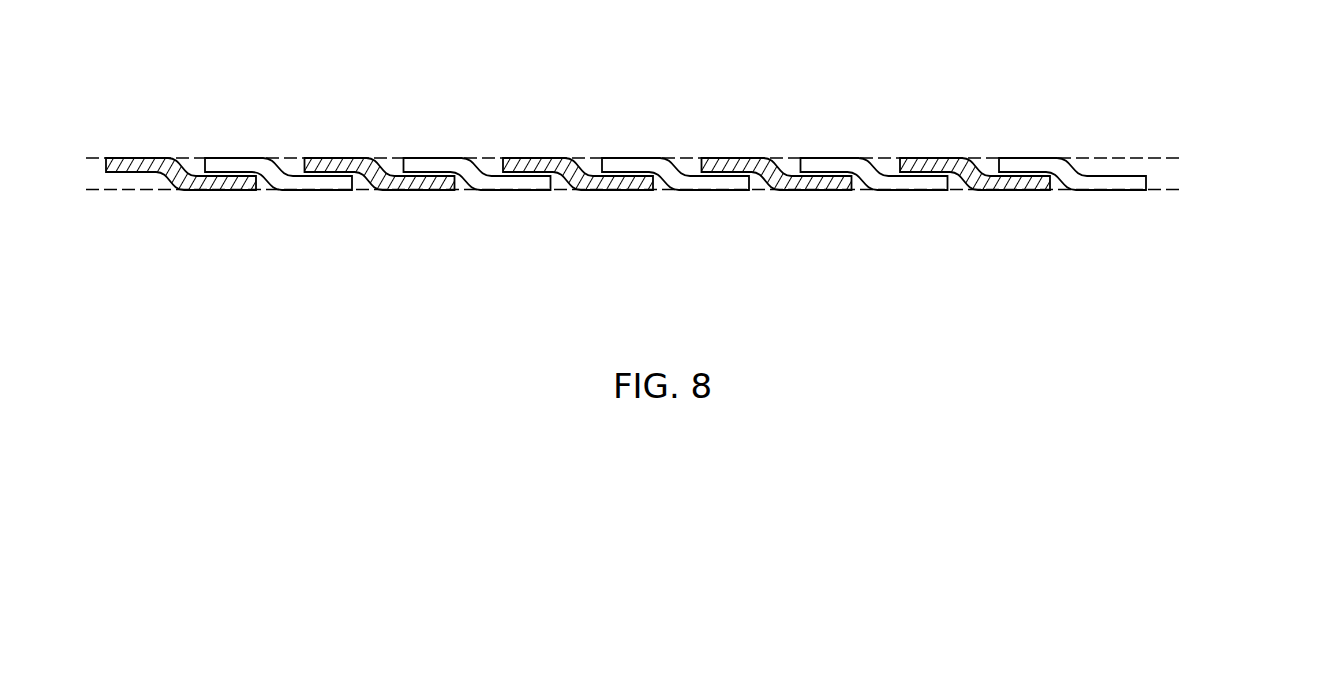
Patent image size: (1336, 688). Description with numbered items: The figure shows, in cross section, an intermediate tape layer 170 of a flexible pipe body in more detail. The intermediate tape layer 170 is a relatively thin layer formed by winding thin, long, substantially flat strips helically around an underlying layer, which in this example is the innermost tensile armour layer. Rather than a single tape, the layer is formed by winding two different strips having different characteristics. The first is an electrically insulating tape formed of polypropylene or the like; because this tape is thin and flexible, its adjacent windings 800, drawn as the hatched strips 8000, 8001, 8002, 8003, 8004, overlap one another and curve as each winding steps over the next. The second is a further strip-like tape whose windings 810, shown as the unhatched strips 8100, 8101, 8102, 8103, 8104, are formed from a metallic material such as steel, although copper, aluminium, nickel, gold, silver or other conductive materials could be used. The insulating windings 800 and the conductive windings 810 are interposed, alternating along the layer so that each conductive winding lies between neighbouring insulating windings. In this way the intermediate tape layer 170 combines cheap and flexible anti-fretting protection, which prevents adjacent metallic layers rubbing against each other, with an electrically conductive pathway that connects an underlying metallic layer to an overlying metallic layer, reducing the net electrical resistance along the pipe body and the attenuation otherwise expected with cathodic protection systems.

The intermediate tape layer 170 is at (1198, 175).
The windings of electrically insulating tape 800 is at (578, 126).
The first insulating tape winding 8000 is at (181, 126).
The second insulating tape winding 8001 is at (380, 126).
The third insulating tape winding 8002 is at (578, 126).
The fourth insulating tape winding 8003 is at (777, 126).
The fifth insulating tape winding 8004 is at (975, 126).
The windings of electrically conductive tape 810 is at (675, 229).
The first conductive tape winding 8100 is at (187, 205).
The second conductive tape winding 8101 is at (477, 229).
The third conductive tape winding 8102 is at (675, 229).
The fourth conductive tape winding 8103 is at (874, 229).
The fifth conductive tape winding 8104 is at (1072, 229).